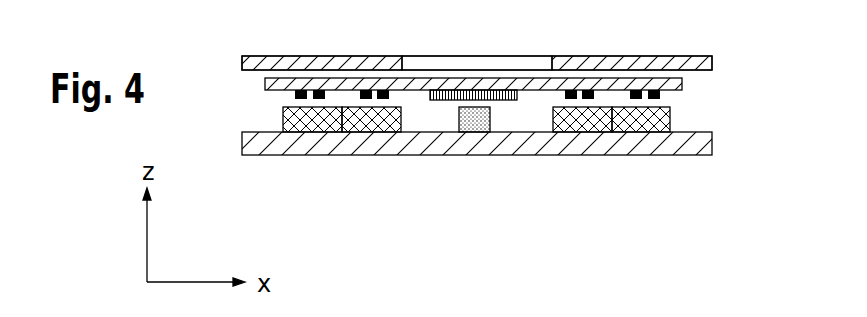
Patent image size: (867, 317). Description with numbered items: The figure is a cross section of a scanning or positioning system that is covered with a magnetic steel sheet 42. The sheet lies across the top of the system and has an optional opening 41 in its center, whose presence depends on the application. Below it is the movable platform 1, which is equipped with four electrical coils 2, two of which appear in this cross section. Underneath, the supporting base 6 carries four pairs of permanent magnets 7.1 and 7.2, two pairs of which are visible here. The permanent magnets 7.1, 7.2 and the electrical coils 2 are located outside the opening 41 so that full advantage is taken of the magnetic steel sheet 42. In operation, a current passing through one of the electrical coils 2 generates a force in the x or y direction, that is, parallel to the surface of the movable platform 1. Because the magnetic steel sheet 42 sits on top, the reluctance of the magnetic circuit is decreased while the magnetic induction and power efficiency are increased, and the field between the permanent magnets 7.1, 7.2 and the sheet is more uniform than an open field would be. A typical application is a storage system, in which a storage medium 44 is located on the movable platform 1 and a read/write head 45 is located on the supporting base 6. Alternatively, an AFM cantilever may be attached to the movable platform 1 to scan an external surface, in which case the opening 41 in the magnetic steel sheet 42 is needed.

The movable platform 1 is at (682, 84).
The electrical coils 2 is at (405, 33).
The supporting base 6 is at (712, 143).
The permanent magnet 7.1 is at (320, 123).
The permanent magnet 7.2 is at (385, 123).
The opening 41 is at (477, 62).
The magnetic steel sheet 42 is at (688, 62).
The storage medium 44 is at (502, 100).
The read/write head 45 is at (475, 127).